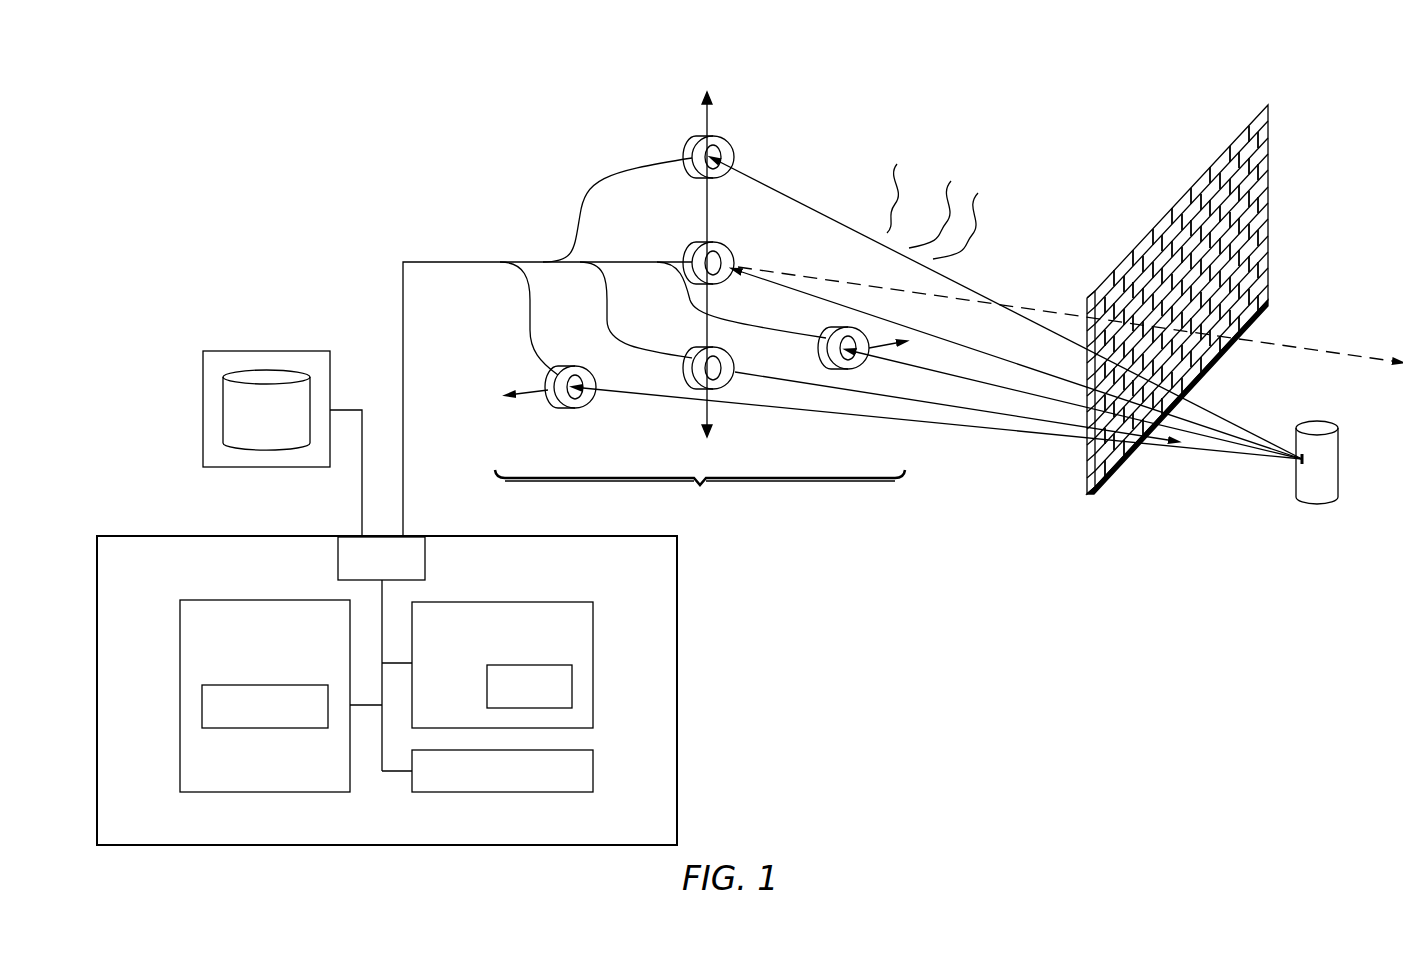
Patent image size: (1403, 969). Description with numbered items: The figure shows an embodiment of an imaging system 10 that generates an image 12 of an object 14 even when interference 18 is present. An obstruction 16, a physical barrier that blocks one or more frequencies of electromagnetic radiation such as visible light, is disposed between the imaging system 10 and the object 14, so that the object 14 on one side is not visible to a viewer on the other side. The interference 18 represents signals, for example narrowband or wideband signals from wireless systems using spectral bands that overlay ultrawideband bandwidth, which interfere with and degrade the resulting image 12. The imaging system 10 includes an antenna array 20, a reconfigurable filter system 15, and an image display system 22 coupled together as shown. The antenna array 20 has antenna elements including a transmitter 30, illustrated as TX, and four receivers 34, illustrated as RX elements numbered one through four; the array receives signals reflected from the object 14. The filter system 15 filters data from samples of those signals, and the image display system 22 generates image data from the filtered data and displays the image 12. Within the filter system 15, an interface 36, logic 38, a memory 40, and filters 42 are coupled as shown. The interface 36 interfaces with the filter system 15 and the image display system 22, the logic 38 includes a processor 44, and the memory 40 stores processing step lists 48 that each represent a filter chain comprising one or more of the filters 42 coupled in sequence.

The imaging system 10 is at (802, 596).
The image 12 is at (266, 410).
The object 14 is at (1316, 425).
The filter system 15 is at (344, 849).
The obstruction 16 is at (1272, 198).
The interference 18 is at (919, 154).
The antenna array 20 is at (654, 314).
The image display system 22 is at (254, 347).
The transmitter 30 is at (690, 353).
The receiver 34 is at (536, 422).
The interface 36 is at (338, 556).
The logic 38 is at (178, 719).
The memory 40 is at (598, 646).
The filters 42 is at (593, 772).
The processor 44 is at (263, 730).
The processing step lists 48 is at (487, 685).